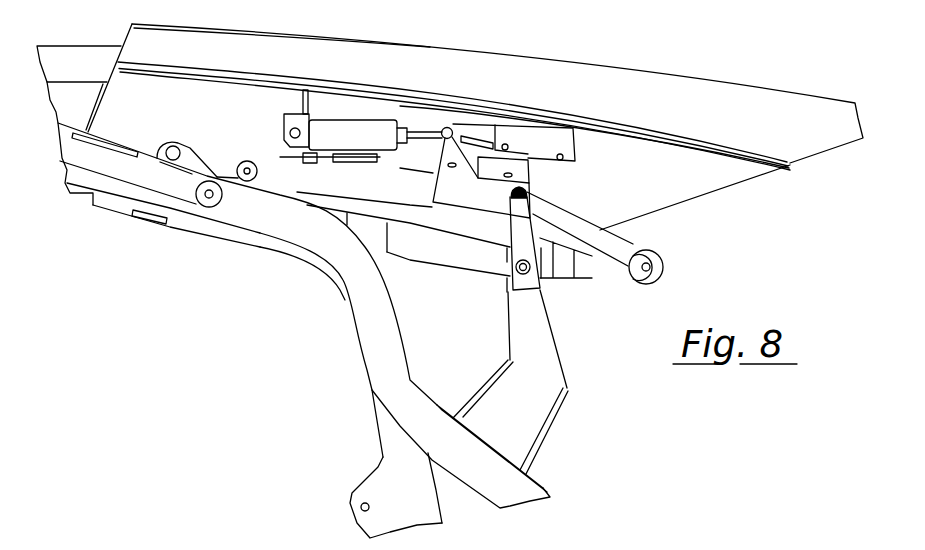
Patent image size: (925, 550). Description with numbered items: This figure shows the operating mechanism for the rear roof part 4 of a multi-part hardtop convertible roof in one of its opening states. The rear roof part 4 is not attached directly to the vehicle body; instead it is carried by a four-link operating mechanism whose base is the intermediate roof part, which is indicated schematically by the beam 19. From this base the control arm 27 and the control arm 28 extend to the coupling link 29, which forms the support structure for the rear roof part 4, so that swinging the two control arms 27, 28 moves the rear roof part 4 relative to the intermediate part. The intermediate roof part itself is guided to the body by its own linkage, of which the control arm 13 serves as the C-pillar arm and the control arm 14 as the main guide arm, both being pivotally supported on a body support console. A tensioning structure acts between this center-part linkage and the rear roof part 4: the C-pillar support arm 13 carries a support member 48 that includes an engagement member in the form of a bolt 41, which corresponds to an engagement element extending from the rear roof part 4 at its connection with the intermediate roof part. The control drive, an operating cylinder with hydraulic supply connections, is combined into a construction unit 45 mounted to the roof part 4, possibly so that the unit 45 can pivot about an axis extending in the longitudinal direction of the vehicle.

The rear roof part 4 is at (808, 131).
The control arm 13 is at (507, 468).
The control arm 14 is at (388, 466).
The beam 19 is at (137, 171).
The control arm 27 is at (283, 173).
The control arm 28 is at (592, 268).
The coupling link 29 is at (575, 230).
The bolt 41 is at (527, 197).
The construction unit 45 is at (370, 92).
The support member 48 is at (548, 352).